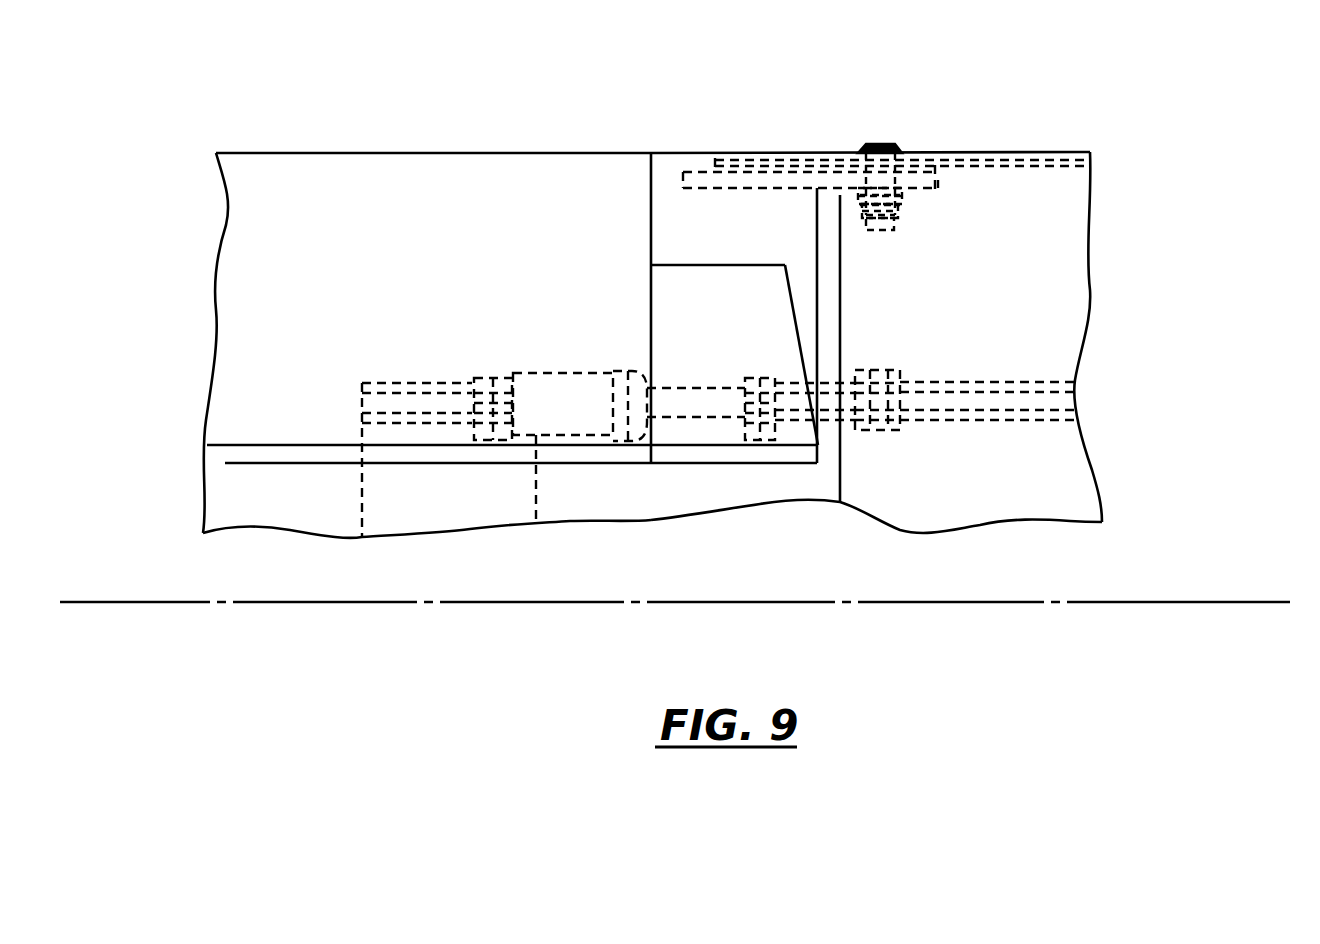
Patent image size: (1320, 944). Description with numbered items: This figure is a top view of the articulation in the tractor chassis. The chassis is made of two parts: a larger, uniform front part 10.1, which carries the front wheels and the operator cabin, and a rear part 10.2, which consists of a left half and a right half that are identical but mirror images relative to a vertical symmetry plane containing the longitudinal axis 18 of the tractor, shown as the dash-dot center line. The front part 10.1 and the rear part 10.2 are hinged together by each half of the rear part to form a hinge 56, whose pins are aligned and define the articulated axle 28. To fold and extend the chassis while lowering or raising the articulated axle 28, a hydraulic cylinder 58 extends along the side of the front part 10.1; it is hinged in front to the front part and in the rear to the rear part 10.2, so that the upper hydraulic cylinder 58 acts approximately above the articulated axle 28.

The front part of the chassis 10.1 is at (400, 283).
The rear part of the chassis 10.2 is at (1042, 303).
The hinge 56 is at (882, 146).
The articulated axle 28 is at (885, 230).
The hydraulic cylinder 58 is at (558, 374).
The longitudinal axis 18 is at (1208, 600).